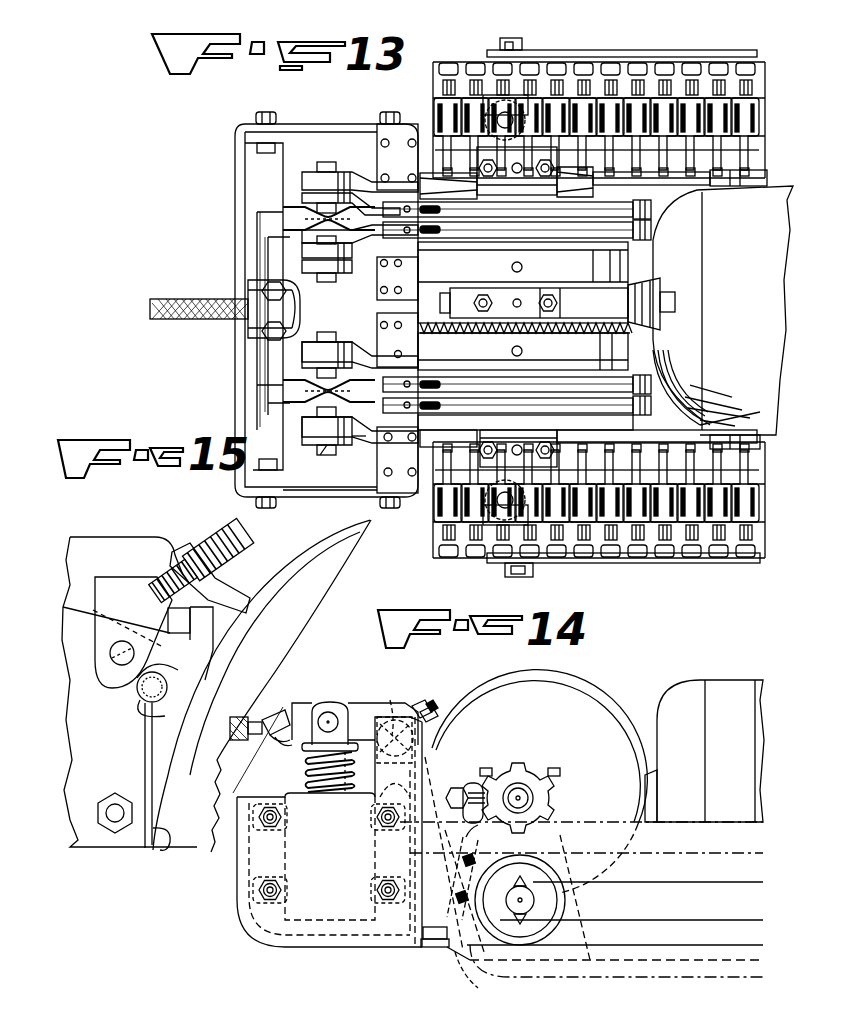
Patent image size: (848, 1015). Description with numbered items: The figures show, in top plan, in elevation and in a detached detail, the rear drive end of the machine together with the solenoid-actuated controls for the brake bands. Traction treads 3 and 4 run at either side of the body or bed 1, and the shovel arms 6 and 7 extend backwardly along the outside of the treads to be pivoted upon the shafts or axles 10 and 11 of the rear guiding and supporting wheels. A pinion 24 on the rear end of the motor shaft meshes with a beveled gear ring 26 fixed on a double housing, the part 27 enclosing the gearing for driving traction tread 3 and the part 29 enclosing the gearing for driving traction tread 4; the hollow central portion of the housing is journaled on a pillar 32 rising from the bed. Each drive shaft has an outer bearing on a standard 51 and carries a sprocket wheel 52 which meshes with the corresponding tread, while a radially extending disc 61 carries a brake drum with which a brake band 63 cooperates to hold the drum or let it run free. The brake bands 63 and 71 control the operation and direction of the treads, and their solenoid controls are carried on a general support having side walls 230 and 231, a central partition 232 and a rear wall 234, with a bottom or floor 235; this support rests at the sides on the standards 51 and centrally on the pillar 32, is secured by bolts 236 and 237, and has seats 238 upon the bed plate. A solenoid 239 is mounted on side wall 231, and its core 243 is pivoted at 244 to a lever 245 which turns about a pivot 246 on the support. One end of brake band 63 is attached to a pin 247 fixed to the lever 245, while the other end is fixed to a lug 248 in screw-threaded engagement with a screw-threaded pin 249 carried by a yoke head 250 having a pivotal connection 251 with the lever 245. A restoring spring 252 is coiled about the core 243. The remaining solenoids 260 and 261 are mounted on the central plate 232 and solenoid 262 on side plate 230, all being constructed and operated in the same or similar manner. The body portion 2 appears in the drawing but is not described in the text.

In FIG. 13, the body or bed 1 is at (735, 418).
In FIG. 13, the vehicle body 2 is at (762, 240).
In FIG. 14, the vehicle body 2 is at (725, 680).
In FIG. 13, the traction tread 3 is at (712, 542).
In FIG. 14, the traction tread 3 is at (620, 985).
In FIG. 13, the traction tread 4 is at (600, 98).
In FIG. 13, the shovel arm 6 is at (640, 555).
In FIG. 14, the shovel arm 6 is at (705, 912).
In FIG. 13, the shovel arm 7 is at (658, 52).
In FIG. 13, the shaft or axle of rear guiding and supporting wheel 10 is at (525, 577).
In FIG. 14, the shaft or axle of rear guiding and supporting wheel 10 is at (530, 902).
In FIG. 13, the shaft or axle of rear guiding and supporting wheel 11 is at (522, 42).
In FIG. 13, the pinion 24 is at (640, 300).
In FIG. 13, the beveled gear ring 26 is at (612, 345).
In FIG. 13, the housing part 27 is at (636, 352).
In FIG. 15, the housing part 27 is at (322, 583).
In FIG. 13, the housing part 29 is at (618, 262).
In FIG. 13, the pillar 32 is at (575, 300).
In FIG. 13, the standard 51 is at (575, 187).
In FIG. 14, the standard 51 is at (475, 976).
In FIG. 13, the sprocket wheel 52 is at (495, 100).
In FIG. 14, the sprocket wheel 52 is at (520, 775).
In FIG. 14, the radially extending disc 61 is at (578, 716).
In FIG. 13, the brake band 63 is at (651, 206).
In FIG. 15, the brake band 63 is at (345, 560).
In FIG. 14, the brake band 63 is at (566, 684).
In FIG. 13, the brake band 71 is at (651, 232).
In FIG. 13, the side wall 230 is at (362, 122).
In FIG. 13, the side wall 231 is at (306, 500).
In FIG. 13, the central partition 232 is at (322, 324).
In FIG. 13, the rear wall 234 is at (236, 390).
In FIG. 14, the bottom or floor 235 is at (310, 913).
In FIG. 14, the bolt 236 is at (463, 800).
In FIG. 14, the bolt 237 is at (416, 950).
In FIG. 14, the seat 238 is at (440, 950).
In FIG. 13, the solenoid 239 is at (296, 422).
In FIG. 14, the solenoid 239 is at (278, 944).
In FIG. 14, the solenoid core 243 is at (305, 768).
In FIG. 13, the pivot 244 is at (322, 460).
In FIG. 14, the pivot 244 is at (332, 708).
In FIG. 13, the lever 245 is at (362, 436).
In FIG. 15, the lever 245 is at (97, 690).
In FIG. 14, the lever 245 is at (362, 724).
In FIG. 15, the lever pivot 246 is at (166, 660).
In FIG. 14, the lever pivot 246 is at (410, 690).
In FIG. 15, the pin 247 is at (152, 702).
In FIG. 13, the lug 248 is at (448, 408).
In FIG. 15, the lug 248 is at (185, 556).
In FIG. 14, the lug 248 is at (438, 714).
In FIG. 13, the screw-threaded pin 249 is at (427, 384).
In FIG. 15, the screw-threaded pin 249 is at (245, 532).
In FIG. 14, the screw-threaded pin 249 is at (432, 708).
In FIG. 15, the yoke head 250 is at (115, 582).
In FIG. 14, the yoke head 250 is at (392, 700).
In FIG. 15, the pivotal connection 251 is at (134, 653).
In FIG. 14, the restoring spring 252 is at (305, 782).
In FIG. 13, the solenoid 260 is at (292, 356).
In FIG. 13, the solenoid 261 is at (292, 250).
In FIG. 13, the solenoid 262 is at (292, 175).